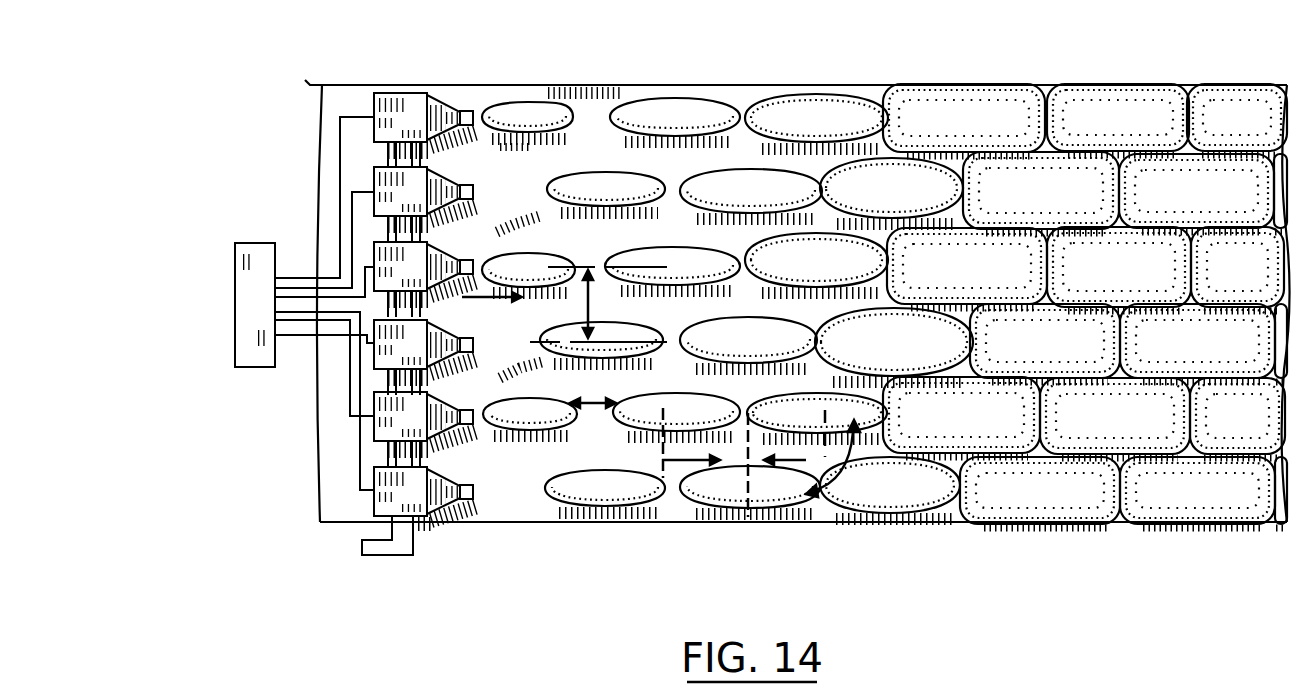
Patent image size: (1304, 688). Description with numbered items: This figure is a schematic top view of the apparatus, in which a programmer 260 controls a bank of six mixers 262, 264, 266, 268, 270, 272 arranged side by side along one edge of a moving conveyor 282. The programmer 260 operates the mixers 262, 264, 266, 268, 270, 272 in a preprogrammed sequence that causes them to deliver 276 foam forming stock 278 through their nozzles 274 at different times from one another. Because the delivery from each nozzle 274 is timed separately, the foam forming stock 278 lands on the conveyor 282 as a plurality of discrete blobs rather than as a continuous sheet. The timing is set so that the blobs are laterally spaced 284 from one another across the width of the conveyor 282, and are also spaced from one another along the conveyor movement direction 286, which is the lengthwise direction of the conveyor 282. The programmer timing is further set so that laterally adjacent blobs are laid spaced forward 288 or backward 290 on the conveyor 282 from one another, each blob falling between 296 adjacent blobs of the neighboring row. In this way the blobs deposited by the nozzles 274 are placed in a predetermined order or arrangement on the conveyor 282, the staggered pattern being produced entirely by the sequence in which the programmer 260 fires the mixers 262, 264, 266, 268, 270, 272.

The programmer 260 is at (217, 294).
The mixer 262 is at (416, 82).
The mixer 264 is at (348, 154).
The mixer 266 is at (348, 242).
The mixer 268 is at (349, 370).
The mixer 270 is at (349, 454).
The mixer 272 is at (349, 508).
The nozzle 274 is at (358, 311).
The delivery 276 is at (275, 335).
The foam forming stock 278 is at (570, 156).
The moving conveyor 282 is at (679, 80).
The lateral spacing 284 is at (588, 303).
The conveyor movement direction 286 is at (591, 406).
The forward spacing 288 is at (670, 460).
The backward spacing 290 is at (804, 460).
The between adjacent blobs 296 is at (853, 430).